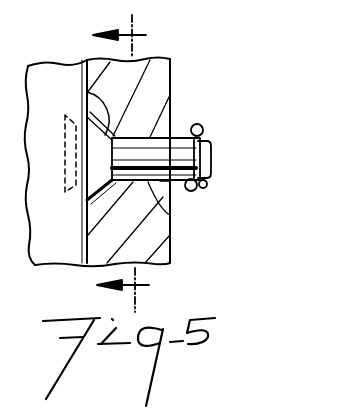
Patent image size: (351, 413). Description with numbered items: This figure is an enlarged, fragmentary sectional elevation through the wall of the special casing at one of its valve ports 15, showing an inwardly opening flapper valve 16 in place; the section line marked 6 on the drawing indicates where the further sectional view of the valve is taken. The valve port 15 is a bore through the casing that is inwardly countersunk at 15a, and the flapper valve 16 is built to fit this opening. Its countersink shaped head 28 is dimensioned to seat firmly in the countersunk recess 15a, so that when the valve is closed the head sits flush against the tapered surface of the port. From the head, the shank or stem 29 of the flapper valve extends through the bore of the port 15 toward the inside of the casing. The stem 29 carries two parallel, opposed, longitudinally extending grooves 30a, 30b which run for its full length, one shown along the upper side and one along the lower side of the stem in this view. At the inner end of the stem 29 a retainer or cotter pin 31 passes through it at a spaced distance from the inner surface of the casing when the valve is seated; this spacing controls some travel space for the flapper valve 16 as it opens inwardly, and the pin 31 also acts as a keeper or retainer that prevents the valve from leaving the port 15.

The section line 6- 6 is at (104, 162).
The valve port 15 is at (171, 228).
The countersunk recess 15a is at (86, 89).
The flapper valve 16 is at (172, 188).
The countersink shaped head 28 is at (108, 179).
The shank or stem 29 is at (176, 139).
The longitudinally extending groove 30a is at (131, 137).
The longitudinally extending groove 30b is at (141, 183).
The retainer or cotter pin 31 is at (201, 188).